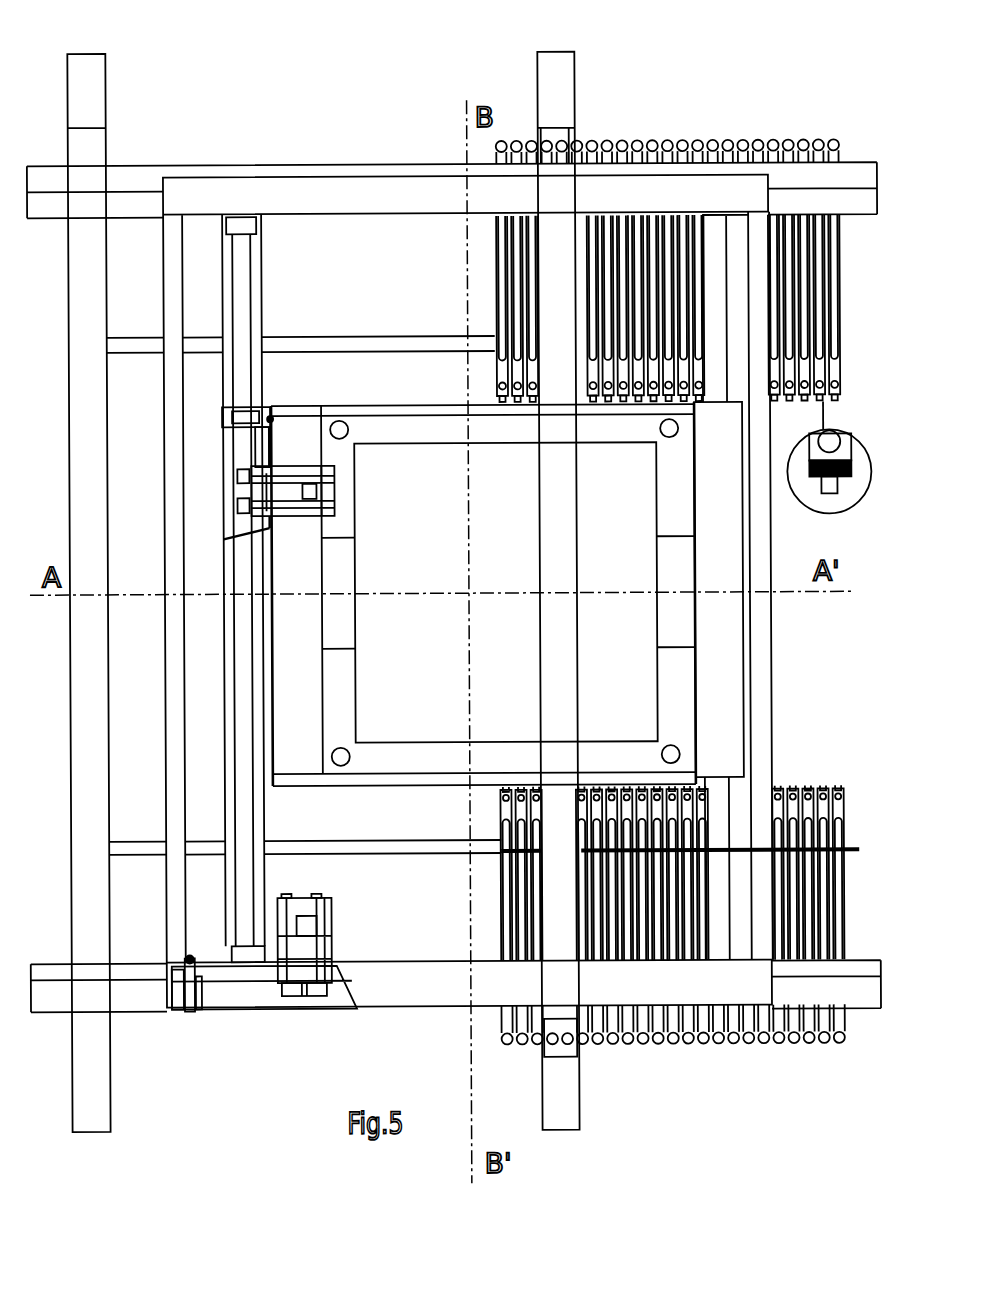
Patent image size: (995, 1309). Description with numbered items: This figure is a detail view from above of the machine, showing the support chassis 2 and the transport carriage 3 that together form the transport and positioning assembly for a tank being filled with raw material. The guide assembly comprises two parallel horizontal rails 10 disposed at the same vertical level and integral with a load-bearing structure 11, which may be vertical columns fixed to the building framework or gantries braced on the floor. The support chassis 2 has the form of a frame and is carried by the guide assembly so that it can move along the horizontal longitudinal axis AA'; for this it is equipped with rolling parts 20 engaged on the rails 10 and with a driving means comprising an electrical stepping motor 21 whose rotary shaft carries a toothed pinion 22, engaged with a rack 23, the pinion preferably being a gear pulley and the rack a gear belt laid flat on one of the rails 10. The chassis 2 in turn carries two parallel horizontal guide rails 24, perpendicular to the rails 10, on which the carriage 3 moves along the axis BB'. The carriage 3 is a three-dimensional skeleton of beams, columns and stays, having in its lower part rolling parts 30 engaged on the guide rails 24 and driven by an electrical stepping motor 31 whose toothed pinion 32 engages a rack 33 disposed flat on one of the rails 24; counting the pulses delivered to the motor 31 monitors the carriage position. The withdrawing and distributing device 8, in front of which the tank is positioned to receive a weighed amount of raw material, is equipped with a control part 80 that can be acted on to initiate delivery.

The support chassis 2 is at (447, 990).
The transport carriage 3 is at (536, 583).
The withdrawing and distributing device 8 is at (677, 591).
The horizontal rail 10 is at (138, 188).
The load-bearing structure 11 is at (83, 77).
The rolling parts 20 is at (175, 990).
The electrical stepping motor 21 is at (323, 924).
The toothed pinion 22 is at (318, 990).
The rack 23 is at (243, 987).
The horizontal guide rails 24 is at (766, 698).
The rolling parts 30 is at (240, 418).
The electrical stepping motor 31 is at (309, 507).
The toothed pinion 32 is at (240, 501).
The rack 33 is at (245, 455).
The control part 80 is at (838, 487).